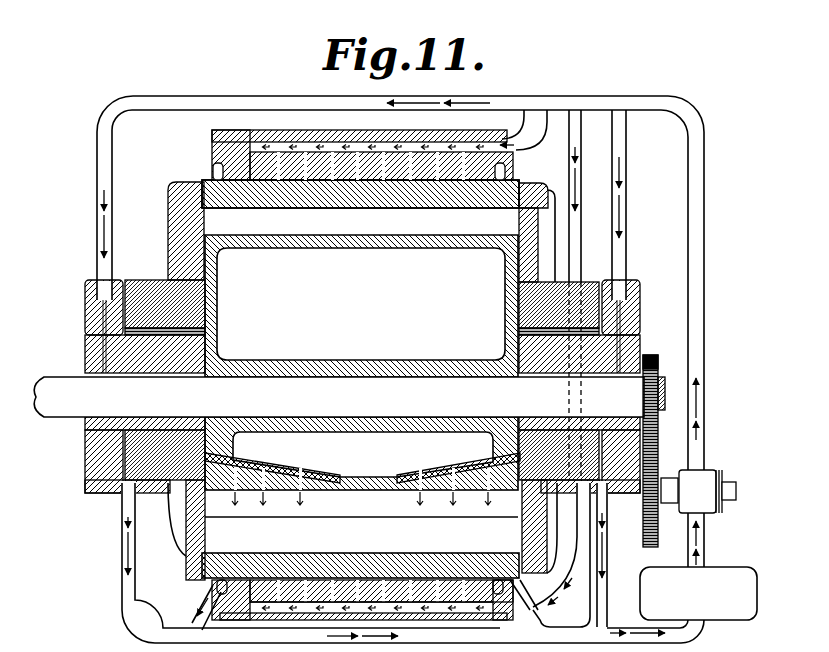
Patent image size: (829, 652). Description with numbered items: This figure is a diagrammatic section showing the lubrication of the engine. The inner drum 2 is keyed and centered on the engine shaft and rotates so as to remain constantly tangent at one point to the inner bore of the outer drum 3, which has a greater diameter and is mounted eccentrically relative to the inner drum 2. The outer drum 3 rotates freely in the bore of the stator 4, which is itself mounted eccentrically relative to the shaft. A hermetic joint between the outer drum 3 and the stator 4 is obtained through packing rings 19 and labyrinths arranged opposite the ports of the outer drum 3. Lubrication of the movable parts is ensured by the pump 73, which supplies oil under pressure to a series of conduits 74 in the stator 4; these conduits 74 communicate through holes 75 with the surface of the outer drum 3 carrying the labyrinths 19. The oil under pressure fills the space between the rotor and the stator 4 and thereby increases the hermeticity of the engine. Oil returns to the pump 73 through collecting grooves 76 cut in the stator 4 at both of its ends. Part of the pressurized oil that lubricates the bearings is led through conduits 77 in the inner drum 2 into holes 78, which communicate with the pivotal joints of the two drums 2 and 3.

The inner drum 2 is at (467, 433).
The outer drum 3 is at (417, 190).
The stator 4 is at (507, 171).
The packing rings 19 is at (343, 183).
The pump 73 is at (699, 485).
The conduits 74 is at (323, 145).
The holes 75 is at (248, 153).
The collecting grooves 76 is at (211, 589).
The conduits 77 is at (397, 477).
The holes 78 is at (410, 485).